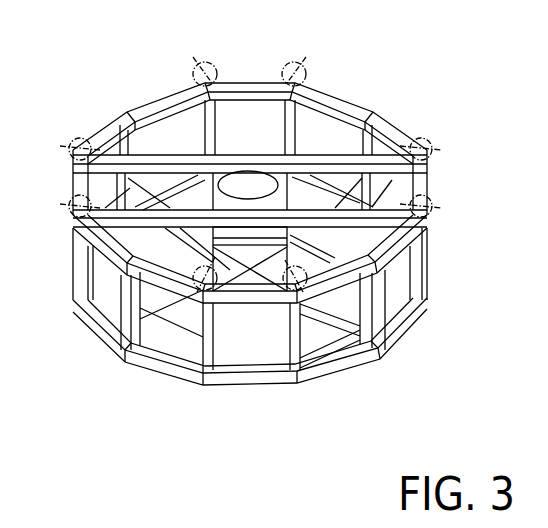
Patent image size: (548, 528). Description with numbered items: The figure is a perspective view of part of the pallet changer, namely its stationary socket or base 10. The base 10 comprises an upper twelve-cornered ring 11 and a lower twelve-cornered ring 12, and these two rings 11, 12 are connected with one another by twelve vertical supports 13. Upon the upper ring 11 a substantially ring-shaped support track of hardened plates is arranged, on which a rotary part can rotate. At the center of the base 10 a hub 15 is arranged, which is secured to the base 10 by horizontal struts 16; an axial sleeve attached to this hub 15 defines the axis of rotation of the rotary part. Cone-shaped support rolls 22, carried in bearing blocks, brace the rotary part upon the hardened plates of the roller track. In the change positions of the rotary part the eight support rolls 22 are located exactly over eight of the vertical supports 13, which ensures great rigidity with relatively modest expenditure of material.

The socket or base 10 is at (251, 234).
The upper twelve-cornered ring 11 is at (360, 100).
The lower twelve-cornered ring 12 is at (407, 325).
The supports 13 is at (80, 282).
The hub 15 is at (247, 171).
The horizontal struts 16 is at (164, 158).
The support rolls 22 is at (292, 70).